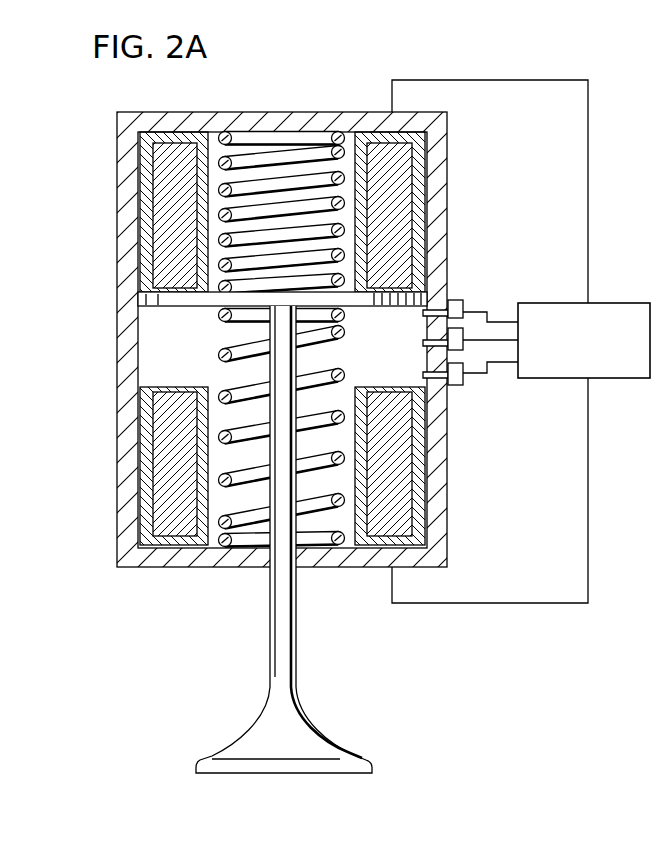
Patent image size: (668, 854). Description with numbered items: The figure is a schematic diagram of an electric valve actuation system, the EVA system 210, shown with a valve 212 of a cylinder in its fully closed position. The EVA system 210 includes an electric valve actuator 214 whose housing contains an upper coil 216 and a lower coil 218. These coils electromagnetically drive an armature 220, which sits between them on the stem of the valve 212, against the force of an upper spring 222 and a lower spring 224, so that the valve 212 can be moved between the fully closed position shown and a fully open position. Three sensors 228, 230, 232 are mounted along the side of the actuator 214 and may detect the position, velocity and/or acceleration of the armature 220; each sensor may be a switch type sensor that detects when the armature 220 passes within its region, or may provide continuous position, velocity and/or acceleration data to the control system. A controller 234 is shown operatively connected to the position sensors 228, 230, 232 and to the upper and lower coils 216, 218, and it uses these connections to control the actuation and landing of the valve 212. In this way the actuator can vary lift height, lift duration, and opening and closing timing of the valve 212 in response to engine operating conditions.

The EVA system 210 is at (438, 66).
The valve 212 is at (325, 740).
The electric valve actuator 214 is at (118, 351).
The upper coil 216 is at (167, 215).
The lower coil 218 is at (165, 466).
The armature 220 is at (163, 298).
The upper spring 222 is at (282, 132).
The lower spring 224 is at (316, 508).
The sensor 228 is at (466, 338).
The sensor 230 is at (455, 386).
The sensor 232 is at (456, 300).
The controller 234 is at (625, 378).